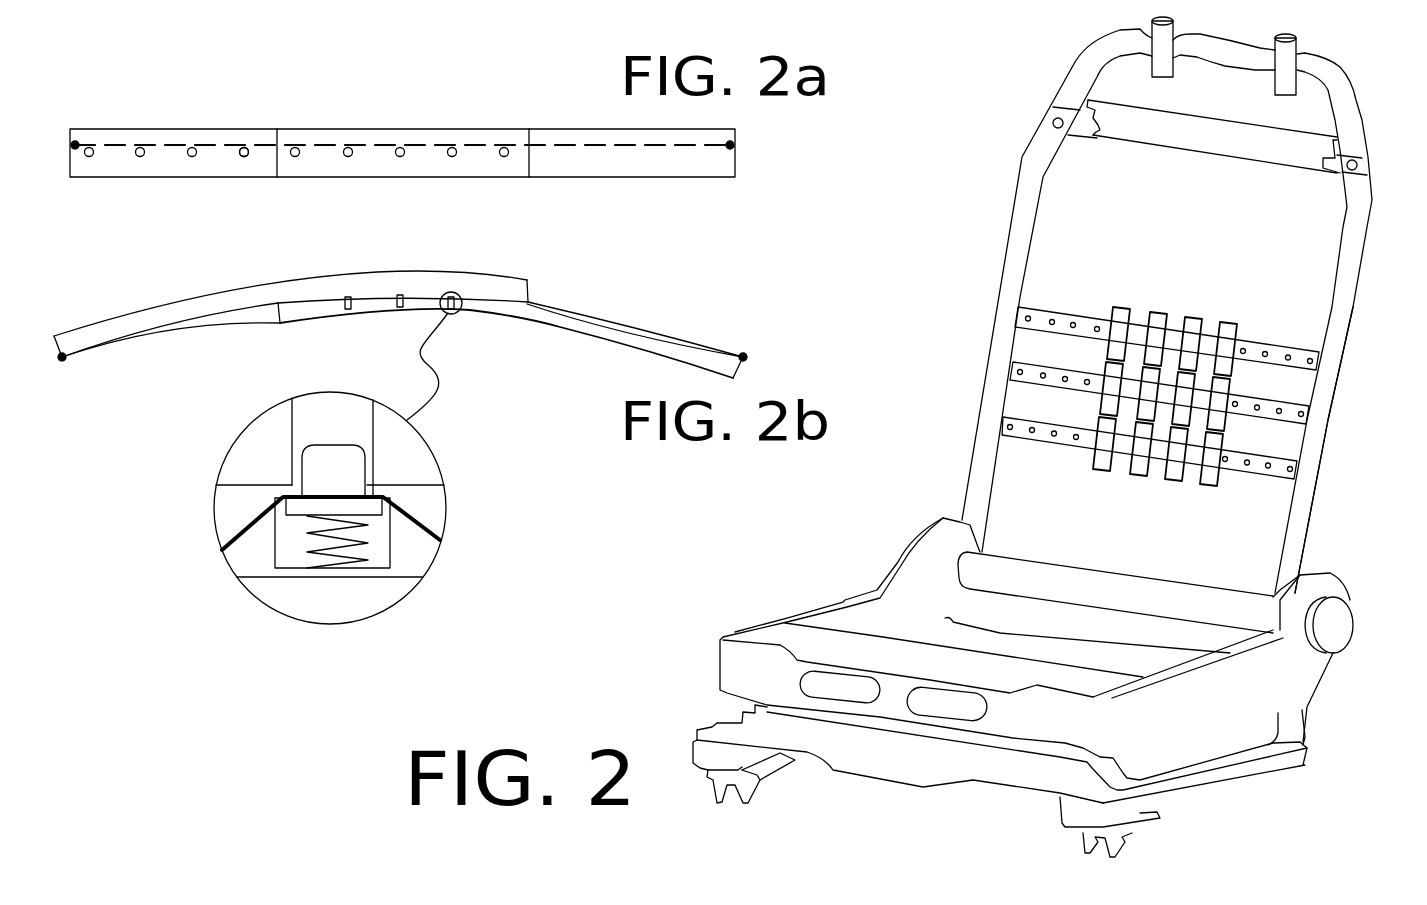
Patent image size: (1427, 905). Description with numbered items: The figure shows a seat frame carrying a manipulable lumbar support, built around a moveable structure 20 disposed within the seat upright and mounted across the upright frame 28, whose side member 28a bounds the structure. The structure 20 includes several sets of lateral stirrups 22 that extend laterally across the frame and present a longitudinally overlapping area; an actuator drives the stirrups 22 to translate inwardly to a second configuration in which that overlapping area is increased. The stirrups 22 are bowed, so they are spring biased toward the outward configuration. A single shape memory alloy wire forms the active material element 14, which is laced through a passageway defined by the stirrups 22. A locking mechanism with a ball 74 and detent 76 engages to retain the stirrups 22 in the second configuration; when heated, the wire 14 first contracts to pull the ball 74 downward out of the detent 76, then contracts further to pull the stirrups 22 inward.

In FIG. 2A, the active material element 14 is at (170, 147).
In FIG. 2B, the active material element 14 is at (187, 325).
In FIG. 2, the moveable structure 20 is at (1056, 434).
In FIG. 2A, the lateral stirrups 22 is at (478, 128).
In FIG. 2B, the lateral stirrups 22 is at (474, 254).
In FIG. 2, the lateral stirrups 22 is at (1250, 475).
In FIG. 2, the upright frame 28 is at (1387, 18).
In FIG. 2, the frame side member 28a is at (1333, 408).
In FIG. 2A, the ball 74 is at (400, 147).
In FIG. 2B, the ball 74 is at (398, 297).
In FIG. 2A, the detent 76 is at (247, 147).
In FIG. 2B, the detent 76 is at (373, 443).